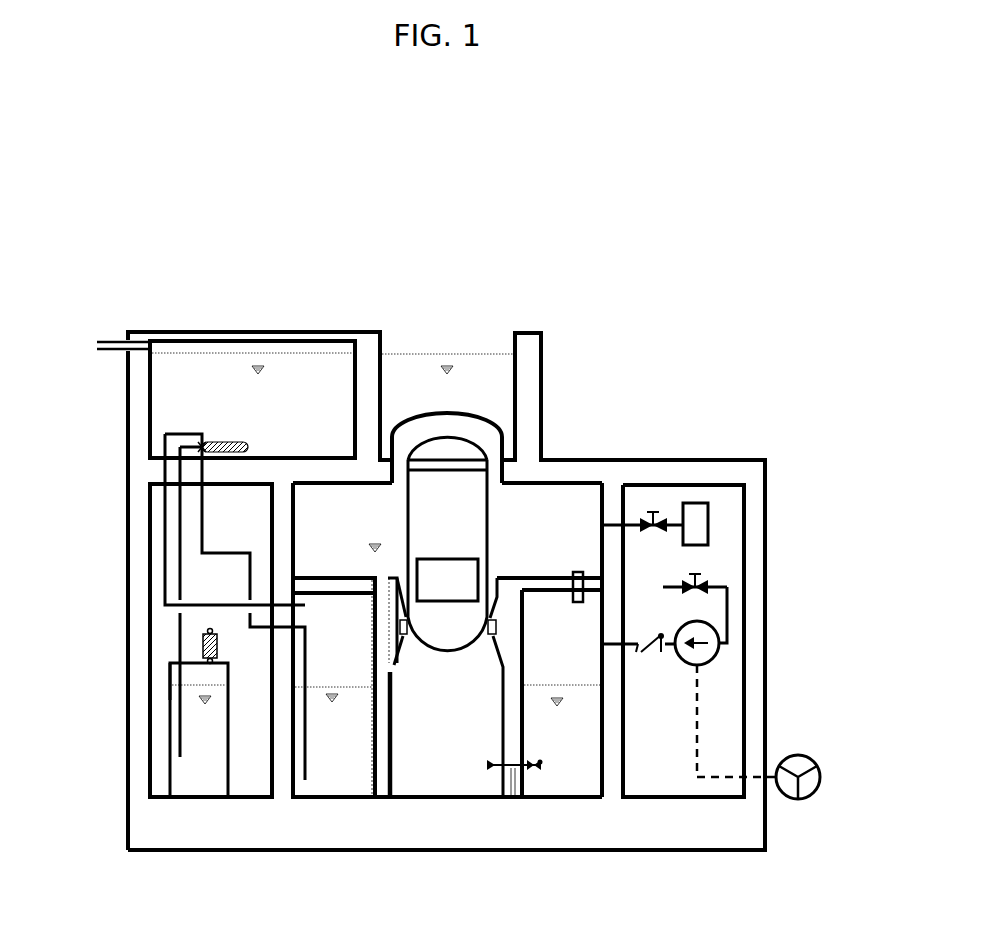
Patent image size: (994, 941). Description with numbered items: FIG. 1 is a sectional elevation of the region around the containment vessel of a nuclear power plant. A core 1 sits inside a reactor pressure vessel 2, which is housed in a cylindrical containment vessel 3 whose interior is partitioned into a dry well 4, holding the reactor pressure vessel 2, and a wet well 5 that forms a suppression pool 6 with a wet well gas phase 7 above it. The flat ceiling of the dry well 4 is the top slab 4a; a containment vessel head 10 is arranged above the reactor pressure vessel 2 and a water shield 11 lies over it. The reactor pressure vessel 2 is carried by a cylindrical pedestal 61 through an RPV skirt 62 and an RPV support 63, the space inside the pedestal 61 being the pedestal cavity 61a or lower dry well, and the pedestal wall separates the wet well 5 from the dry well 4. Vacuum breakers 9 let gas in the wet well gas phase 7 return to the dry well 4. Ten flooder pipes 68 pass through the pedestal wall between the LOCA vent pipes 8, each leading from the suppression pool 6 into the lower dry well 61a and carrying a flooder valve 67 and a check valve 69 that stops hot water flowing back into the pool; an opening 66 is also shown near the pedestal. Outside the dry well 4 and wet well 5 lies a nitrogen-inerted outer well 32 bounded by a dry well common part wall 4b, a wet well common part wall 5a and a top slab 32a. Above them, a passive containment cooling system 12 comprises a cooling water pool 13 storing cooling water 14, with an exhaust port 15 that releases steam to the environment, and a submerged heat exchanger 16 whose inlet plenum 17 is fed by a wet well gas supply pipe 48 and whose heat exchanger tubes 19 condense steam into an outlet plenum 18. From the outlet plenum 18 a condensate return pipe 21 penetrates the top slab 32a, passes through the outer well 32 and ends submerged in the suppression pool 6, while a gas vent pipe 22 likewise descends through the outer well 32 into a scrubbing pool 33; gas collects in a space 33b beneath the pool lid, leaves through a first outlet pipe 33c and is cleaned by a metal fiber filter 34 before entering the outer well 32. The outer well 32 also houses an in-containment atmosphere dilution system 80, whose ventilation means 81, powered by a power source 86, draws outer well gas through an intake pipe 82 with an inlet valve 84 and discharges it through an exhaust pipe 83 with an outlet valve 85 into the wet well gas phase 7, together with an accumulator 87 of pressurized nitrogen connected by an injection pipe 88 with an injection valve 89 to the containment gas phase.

The core 1 is at (447, 580).
The reactor pressure vessel 2 is at (447, 543).
The containment vessel 3 is at (581, 446).
The dry well 4 is at (549, 541).
The top slab 4a is at (313, 478).
The dry well common part wall 4b is at (275, 555).
The wet well 5 is at (627, 703).
The wet well common part wall 5a is at (277, 708).
The suppression pool 6 is at (562, 715).
The wet well gas phase 7 is at (562, 693).
The LOCA vent pipe 8 is at (372, 733).
The vacuum breaker 9 is at (575, 572).
The containment vessel head 10 is at (503, 437).
The water shield 11 is at (475, 354).
The passive containment cooling system 12 is at (197, 293).
The cooling water pool 13 is at (180, 352).
The cooling water 14 is at (292, 367).
The exhaust port 15 is at (97, 343).
The heat exchanger 16 is at (227, 386).
The inlet plenum 17 is at (198, 433).
The outlet plenum 18 is at (183, 445).
The heat exchanger tube 19 is at (237, 440).
The condensate return pipe 21 is at (197, 547).
The gas vent pipe 22 is at (178, 632).
The outer well 32 is at (155, 662).
The top slab 32a is at (160, 490).
The scrubbing pool 33 is at (168, 730).
The space 33b is at (173, 672).
The first outlet pipe 33c is at (200, 773).
The metal fiber filter 34 is at (220, 642).
The wet well gas supply pipe 48 is at (163, 566).
The pedestal 61 is at (390, 727).
The pedestal cavity 61a is at (471, 785).
The RPV skirt 62 is at (497, 585).
The RPV support 63 is at (495, 640).
The opening 66 is at (395, 663).
The flooder valve 67 is at (490, 758).
The flooder pipe 68 is at (513, 775).
The check valve 69 is at (540, 762).
The in-containment atmosphere dilution system 80 is at (730, 650).
The ventilation means 81 is at (707, 663).
The intake pipe 82 is at (727, 612).
The exhaust pipe 83 is at (607, 650).
The inlet valve 84 is at (697, 575).
The outlet valve 85 is at (640, 635).
The power source 86 is at (800, 756).
The accumulator 87 is at (708, 522).
The injection pipe 88 is at (607, 521).
The injection valve 89 is at (662, 527).